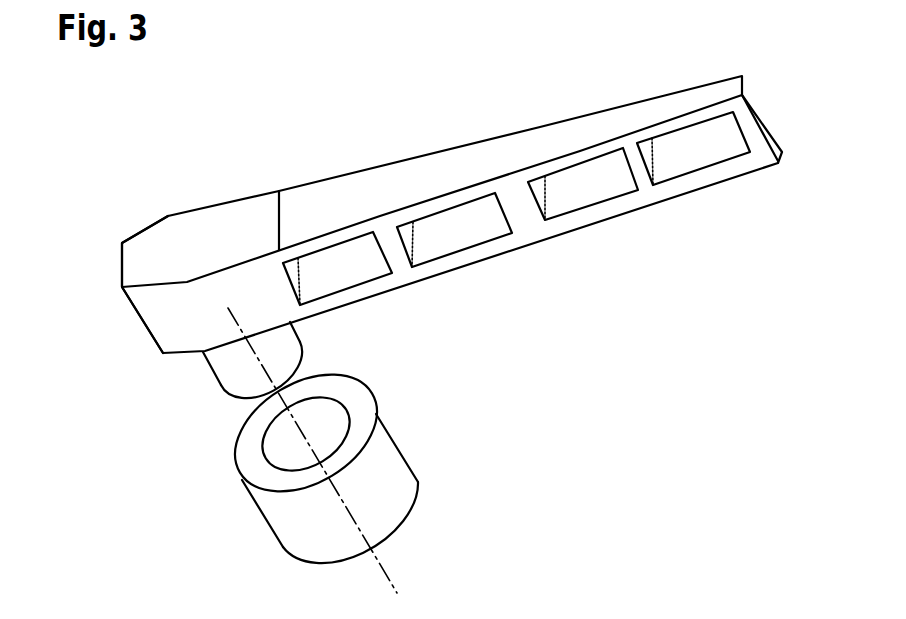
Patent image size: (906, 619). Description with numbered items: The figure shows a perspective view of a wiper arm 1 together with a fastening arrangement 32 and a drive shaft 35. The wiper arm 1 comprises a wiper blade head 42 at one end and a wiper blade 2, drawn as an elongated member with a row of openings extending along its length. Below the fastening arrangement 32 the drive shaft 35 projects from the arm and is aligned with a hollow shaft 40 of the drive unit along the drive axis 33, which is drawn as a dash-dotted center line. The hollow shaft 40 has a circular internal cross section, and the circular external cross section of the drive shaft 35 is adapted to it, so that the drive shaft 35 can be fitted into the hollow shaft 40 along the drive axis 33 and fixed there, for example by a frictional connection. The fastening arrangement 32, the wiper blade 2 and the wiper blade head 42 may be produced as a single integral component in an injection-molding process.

The wiper arm 1 is at (424, 122).
The wiper blade 2 is at (575, 233).
The fastening arrangement 32 is at (90, 228).
The drive axis 33 is at (387, 572).
The drive shaft 35 is at (211, 377).
The hollow shaft 40 is at (407, 452).
The wiper blade head 42 is at (207, 222).